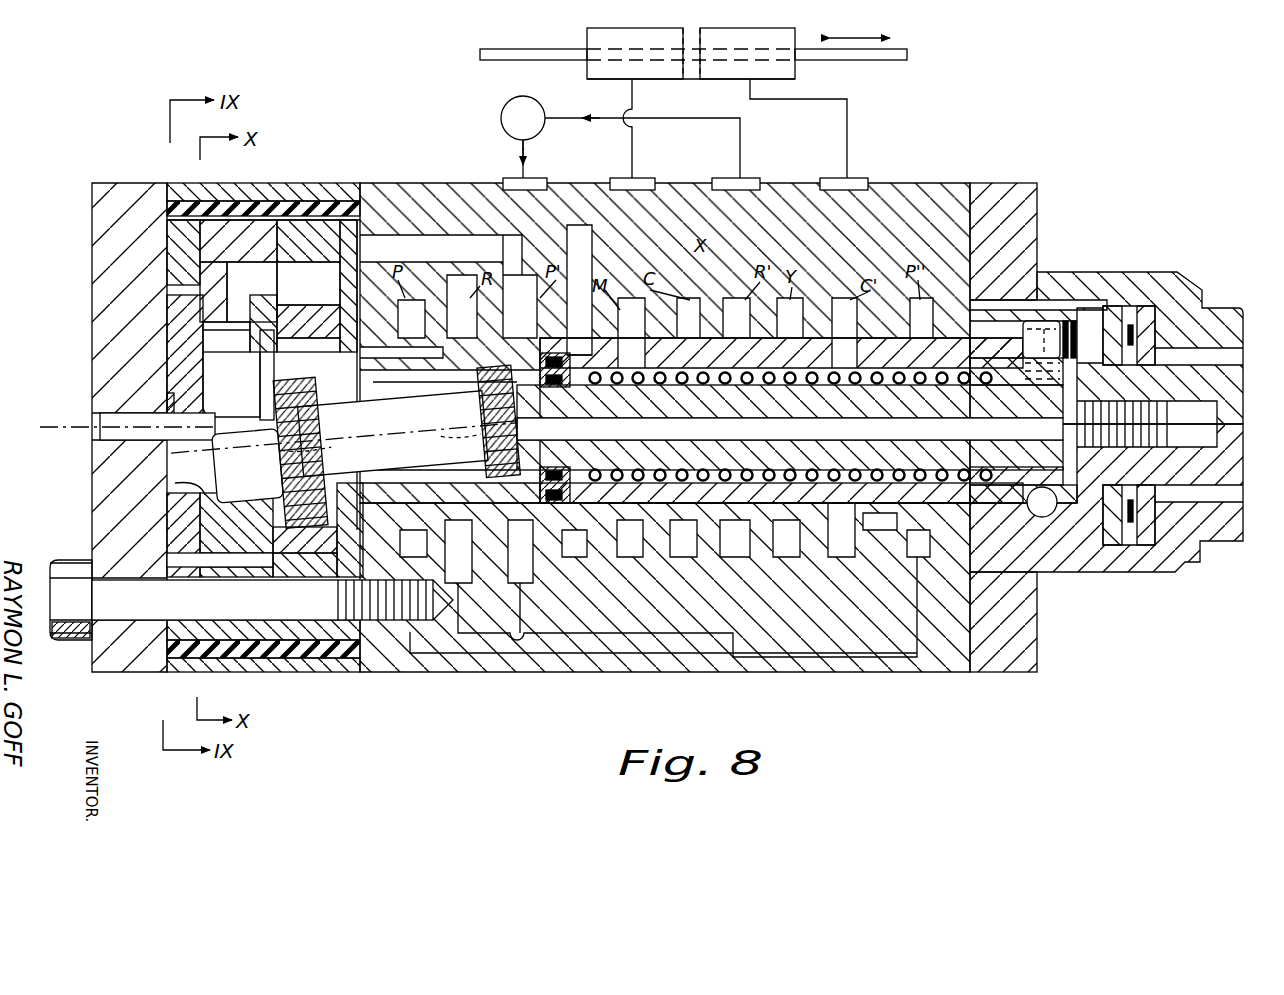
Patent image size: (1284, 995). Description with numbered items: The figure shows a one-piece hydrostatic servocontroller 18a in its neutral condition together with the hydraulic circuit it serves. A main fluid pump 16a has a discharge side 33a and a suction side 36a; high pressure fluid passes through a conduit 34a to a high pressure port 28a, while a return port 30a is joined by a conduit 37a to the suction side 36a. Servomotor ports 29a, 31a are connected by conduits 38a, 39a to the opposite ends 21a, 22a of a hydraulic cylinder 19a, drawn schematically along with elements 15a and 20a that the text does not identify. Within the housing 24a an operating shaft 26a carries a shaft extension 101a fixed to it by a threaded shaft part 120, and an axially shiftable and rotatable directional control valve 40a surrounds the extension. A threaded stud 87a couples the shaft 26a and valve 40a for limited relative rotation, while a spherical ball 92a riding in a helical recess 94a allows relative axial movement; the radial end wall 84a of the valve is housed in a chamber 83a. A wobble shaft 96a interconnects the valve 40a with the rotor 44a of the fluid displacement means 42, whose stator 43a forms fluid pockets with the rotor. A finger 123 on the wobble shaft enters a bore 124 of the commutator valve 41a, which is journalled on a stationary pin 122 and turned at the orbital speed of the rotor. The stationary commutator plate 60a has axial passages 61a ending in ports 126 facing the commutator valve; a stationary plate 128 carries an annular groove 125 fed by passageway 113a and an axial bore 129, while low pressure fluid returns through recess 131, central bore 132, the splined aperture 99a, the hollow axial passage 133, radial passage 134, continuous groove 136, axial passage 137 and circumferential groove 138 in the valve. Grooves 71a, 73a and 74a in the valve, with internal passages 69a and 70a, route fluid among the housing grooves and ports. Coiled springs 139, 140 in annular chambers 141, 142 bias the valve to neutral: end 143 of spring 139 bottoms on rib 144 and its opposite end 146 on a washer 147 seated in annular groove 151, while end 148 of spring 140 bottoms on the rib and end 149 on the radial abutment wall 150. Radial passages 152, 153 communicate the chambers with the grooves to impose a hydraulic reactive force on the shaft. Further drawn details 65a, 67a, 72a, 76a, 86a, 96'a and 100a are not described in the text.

The piston rod 15a is at (927, 42).
The main fluid pump 16a is at (523, 96).
The controller 18a is at (903, 132).
The hydraulic cylinder 19a is at (640, 36).
The cylinder second chamber 20a is at (708, 36).
The opposite end of the cylinder 21a is at (612, 28).
The one end of the hydraulic cylinder 22a is at (786, 34).
The housing 24a is at (990, 182).
The operating shaft 26a is at (1182, 370).
The high pressure port 28a is at (518, 188).
The servomotor port 29a is at (634, 178).
The return port 30a is at (746, 178).
The servomotor port 31a is at (860, 180).
The discharge side of the main fluid pump 33a is at (534, 136).
The conduit 34a is at (520, 163).
The suction side of the main pump 36a is at (548, 117).
The conduit 37a is at (703, 118).
The conduit 38a is at (635, 101).
The conduit 39a is at (830, 99).
The fluid directional control valve 40a is at (707, 357).
The commutator valve 41a is at (125, 330).
The fluid displacement means 42 is at (305, 198).
The stator 43a is at (262, 560).
The rotor 44a is at (262, 527).
The stationary commutator plate 60a is at (218, 257).
The axial passages 61a is at (232, 305).
The lower body insert 65a is at (605, 635).
The bottom wall 67a is at (810, 672).
The internal passage 69a is at (620, 213).
The internal passage 70a is at (848, 245).
The groove 71a is at (470, 338).
The port 72a is at (600, 338).
The groove 73a is at (688, 298).
The groove 74a is at (760, 386).
The passage 76a is at (812, 338).
The chamber 83a is at (1040, 300).
The radial end wall 84a is at (1095, 300).
The block 86a is at (335, 535).
The threaded stud 87a is at (1010, 398).
The spherical ball 92a is at (1090, 530).
The helical recess 94a is at (1042, 517).
The wobble shaft 96a is at (275, 450).
The gear ring 96'a is at (417, 428).
The splined aperture 99a is at (245, 375).
The piston 100a is at (425, 380).
The shaft extension 101a is at (855, 386).
The passageway 113a is at (535, 235).
The threaded shaft part 120 is at (1140, 420).
The stationary pin 122 is at (110, 415).
The finger 123 is at (262, 440).
The bore 124 is at (270, 300).
The annular groove 125 is at (130, 612).
The ports 126 is at (178, 333).
The stationary plate 128 is at (340, 296).
The axial bore 129 is at (318, 620).
The recess 131 is at (175, 483).
The central bore 132 is at (225, 375).
The hollow axial passage 133 is at (790, 427).
The radial passage 134 is at (975, 455).
The circumferentially continuous groove 136 is at (975, 355).
The axial passage 137 is at (938, 338).
The circumferential groove 138 is at (885, 545).
The coiled spring 139 is at (715, 480).
The coiled spring 140 is at (870, 482).
The annular chamber 141 is at (672, 387).
The annular chamber 142 is at (935, 338).
The one end of the spring 143 is at (732, 387).
The rib 144 is at (795, 462).
The opposite end of the spring 146 is at (595, 386).
The washer 147 is at (563, 390).
The one end of the spring 148 is at (770, 387).
The opposite end of the spring 149 is at (912, 386).
The radial abutment wall 150 is at (930, 395).
The annular groove 151 is at (580, 530).
The radial passage 152 is at (650, 400).
The radial passage 153 is at (866, 426).